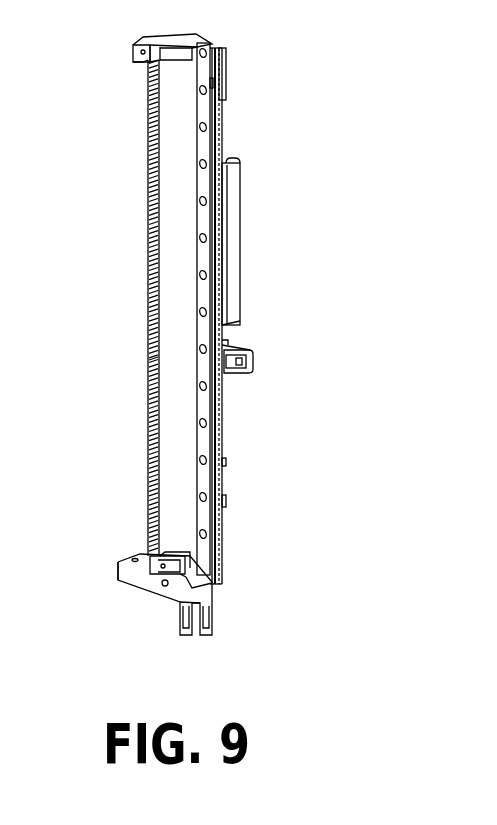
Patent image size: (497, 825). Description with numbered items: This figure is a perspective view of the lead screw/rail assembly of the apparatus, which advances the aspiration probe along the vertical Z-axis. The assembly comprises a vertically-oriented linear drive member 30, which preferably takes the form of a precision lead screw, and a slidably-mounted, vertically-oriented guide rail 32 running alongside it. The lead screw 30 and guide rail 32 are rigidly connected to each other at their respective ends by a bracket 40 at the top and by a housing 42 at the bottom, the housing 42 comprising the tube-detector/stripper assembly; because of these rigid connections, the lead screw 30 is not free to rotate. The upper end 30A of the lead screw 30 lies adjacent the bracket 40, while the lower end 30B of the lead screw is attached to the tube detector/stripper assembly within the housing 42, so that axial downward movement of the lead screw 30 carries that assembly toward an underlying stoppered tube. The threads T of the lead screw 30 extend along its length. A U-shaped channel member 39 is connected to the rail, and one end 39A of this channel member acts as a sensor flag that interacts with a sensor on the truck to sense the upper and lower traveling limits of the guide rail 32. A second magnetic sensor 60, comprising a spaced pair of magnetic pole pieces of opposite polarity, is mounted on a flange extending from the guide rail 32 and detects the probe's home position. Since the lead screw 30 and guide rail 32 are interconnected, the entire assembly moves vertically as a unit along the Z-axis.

The linear drive member 30 is at (148, 255).
The first end of chain 30A is at (146, 62).
The lower end of the lead screw 30B is at (150, 552).
The guide rail 32 is at (199, 143).
The U-shaped channel member 39 is at (262, 186).
The end of U-shaped channel member 39A is at (222, 163).
The bracket 40 is at (196, 38).
The housing 42 is at (143, 577).
The second magnetic sensor 60 is at (280, 352).
The teeth T is at (148, 363).